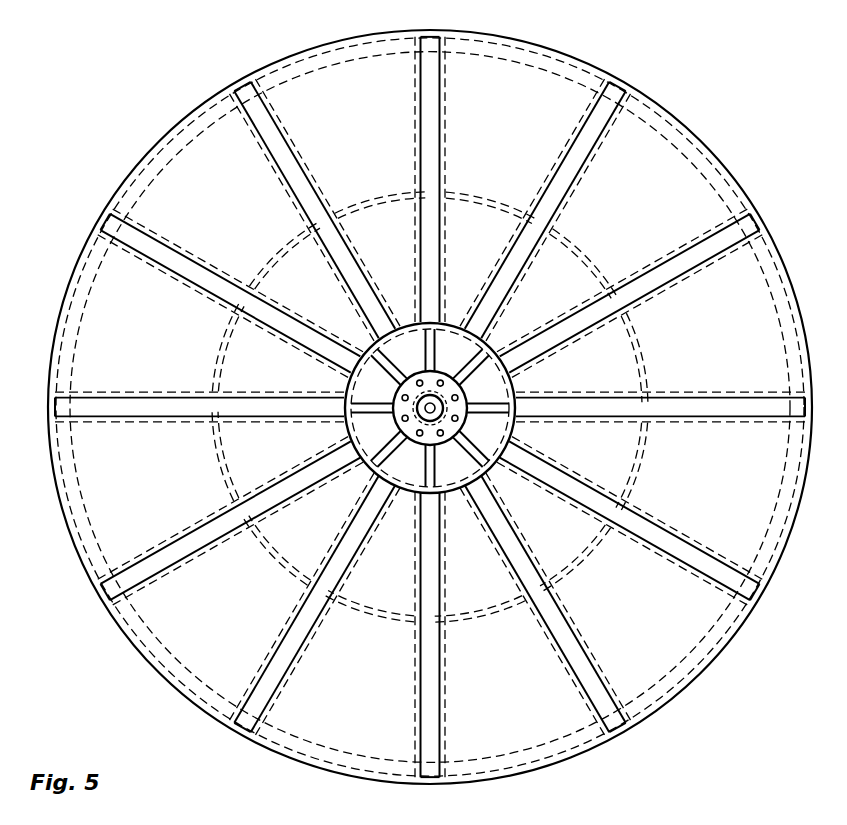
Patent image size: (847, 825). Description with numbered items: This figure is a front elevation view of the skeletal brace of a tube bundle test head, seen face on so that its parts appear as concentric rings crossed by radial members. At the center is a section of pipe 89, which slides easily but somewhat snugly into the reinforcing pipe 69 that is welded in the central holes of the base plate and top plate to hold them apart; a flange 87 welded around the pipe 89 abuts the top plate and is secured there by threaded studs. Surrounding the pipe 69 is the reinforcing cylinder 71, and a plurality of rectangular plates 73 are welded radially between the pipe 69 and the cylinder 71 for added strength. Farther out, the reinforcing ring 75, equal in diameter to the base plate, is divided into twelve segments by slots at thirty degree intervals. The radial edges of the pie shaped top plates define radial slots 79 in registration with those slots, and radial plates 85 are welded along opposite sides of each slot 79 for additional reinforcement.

The reinforcing pipe 69 is at (453, 400).
The reinforcing cylinder 71 is at (372, 433).
The rectangular plates 73 is at (373, 408).
The reinforcing ring 75 is at (282, 248).
The radial slots 79 is at (268, 122).
The radial plates 85 is at (448, 119).
The flange 87 is at (407, 440).
The section of pipe 89 is at (432, 392).